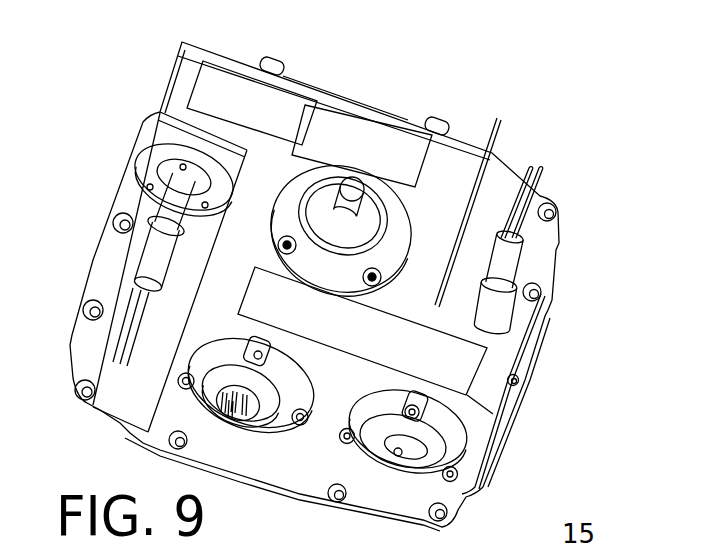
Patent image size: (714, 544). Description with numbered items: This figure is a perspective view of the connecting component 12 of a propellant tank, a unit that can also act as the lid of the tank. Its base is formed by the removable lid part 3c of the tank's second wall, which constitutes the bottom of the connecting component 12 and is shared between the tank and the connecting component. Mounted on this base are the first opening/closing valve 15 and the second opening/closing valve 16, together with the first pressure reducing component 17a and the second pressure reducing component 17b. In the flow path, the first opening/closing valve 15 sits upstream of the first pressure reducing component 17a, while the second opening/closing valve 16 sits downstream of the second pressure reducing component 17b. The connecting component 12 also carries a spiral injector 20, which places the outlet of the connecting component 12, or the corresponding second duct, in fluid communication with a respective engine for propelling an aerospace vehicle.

The removable lid part 3c is at (538, 258).
The connecting component 12 is at (530, 350).
The first opening/closing valve 15 is at (158, 206).
The second opening/closing valve 16 is at (517, 250).
The first pressure reducing component 17a is at (410, 117).
The second pressure reducing component 17b is at (450, 433).
The spiral injector 20 is at (298, 206).